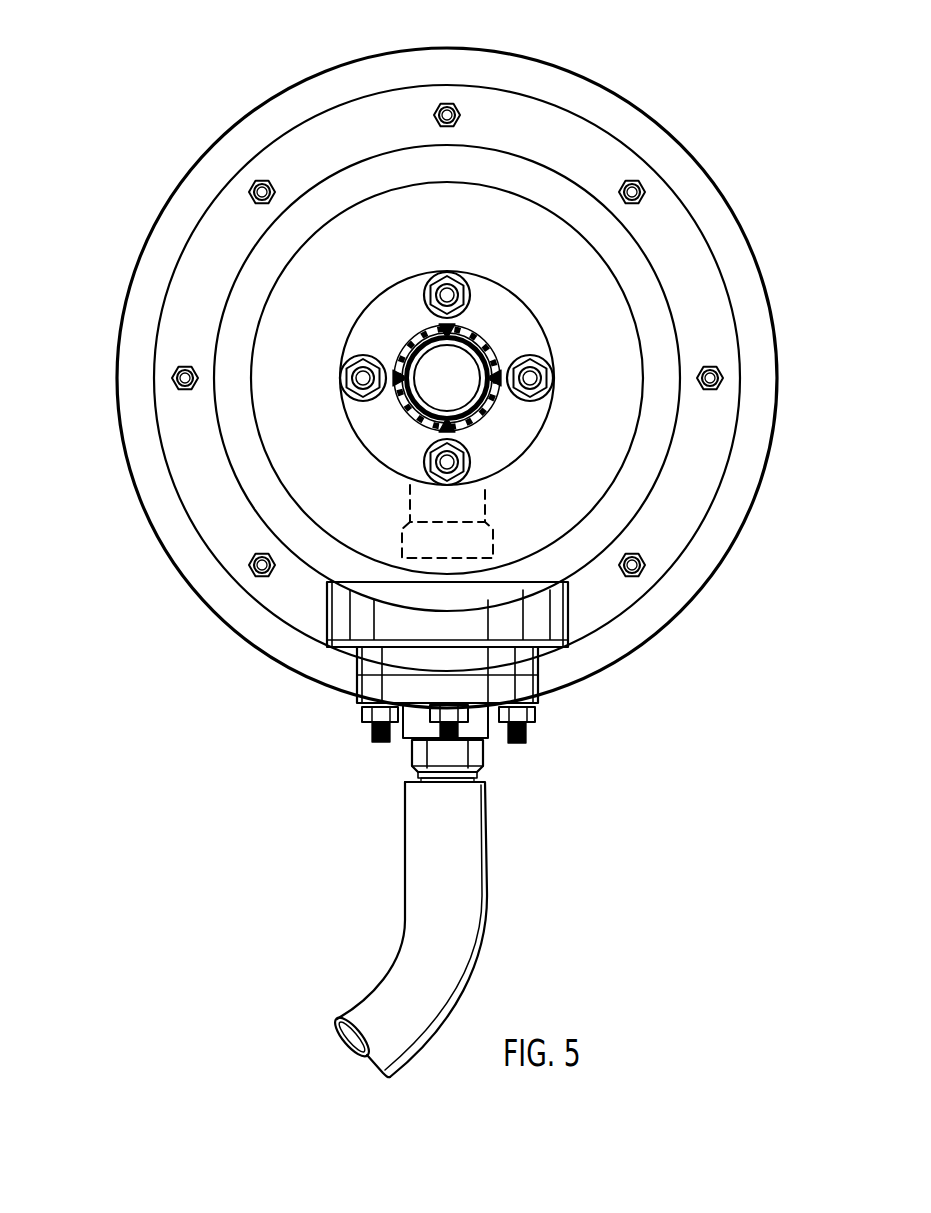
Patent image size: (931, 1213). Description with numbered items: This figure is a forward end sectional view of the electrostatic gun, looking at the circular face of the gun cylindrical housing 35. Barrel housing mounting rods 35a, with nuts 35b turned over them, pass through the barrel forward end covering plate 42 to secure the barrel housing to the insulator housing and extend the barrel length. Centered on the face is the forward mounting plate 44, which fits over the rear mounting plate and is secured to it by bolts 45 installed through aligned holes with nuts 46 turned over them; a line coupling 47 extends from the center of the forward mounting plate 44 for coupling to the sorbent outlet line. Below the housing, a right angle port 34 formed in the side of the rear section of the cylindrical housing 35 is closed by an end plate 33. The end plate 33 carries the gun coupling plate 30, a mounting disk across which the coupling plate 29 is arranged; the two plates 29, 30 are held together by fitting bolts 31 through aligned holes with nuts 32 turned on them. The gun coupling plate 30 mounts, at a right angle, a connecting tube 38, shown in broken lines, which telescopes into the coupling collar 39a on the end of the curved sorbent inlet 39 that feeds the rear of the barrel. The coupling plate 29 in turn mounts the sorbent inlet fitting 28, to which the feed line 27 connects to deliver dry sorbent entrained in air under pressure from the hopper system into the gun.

The feed line 27 is at (487, 893).
The sorbent inlet fitting 28 is at (485, 758).
The coupling plate 29 is at (538, 685).
The gun coupling plate 30 is at (532, 672).
The fitting bolts 31 is at (413, 740).
The nuts 32 is at (536, 715).
The end plate 33 is at (358, 650).
The right angle port 34 is at (340, 617).
The gun cylindrical housing 35 is at (257, 507).
The barrel housing mounting rods 35a is at (450, 104).
The nuts 35b is at (460, 115).
The connecting tube 38 is at (495, 568).
The sorbent inlet 39 is at (488, 509).
The coupling collar 39a is at (493, 538).
The barrel forward end covering plate 42 is at (575, 245).
The forward mounting plate 44 is at (523, 312).
The bolts 45 is at (470, 462).
The nuts 46 is at (432, 460).
The line coupling 47 is at (420, 350).